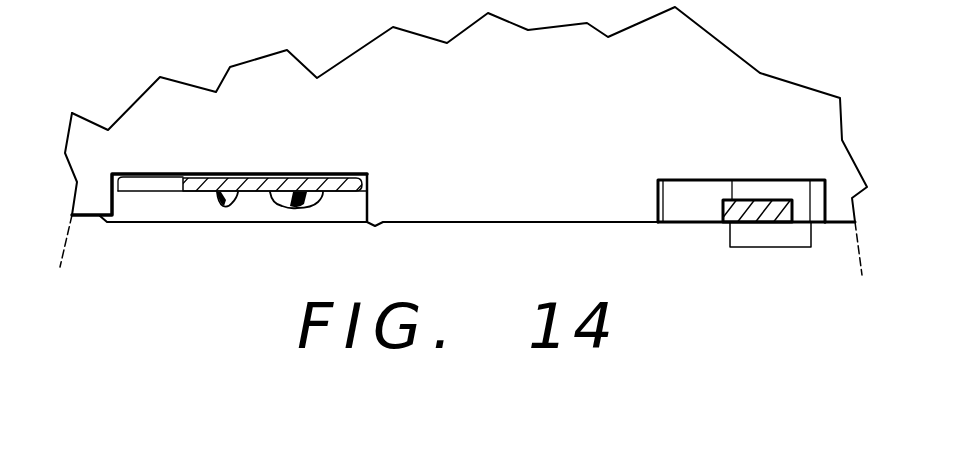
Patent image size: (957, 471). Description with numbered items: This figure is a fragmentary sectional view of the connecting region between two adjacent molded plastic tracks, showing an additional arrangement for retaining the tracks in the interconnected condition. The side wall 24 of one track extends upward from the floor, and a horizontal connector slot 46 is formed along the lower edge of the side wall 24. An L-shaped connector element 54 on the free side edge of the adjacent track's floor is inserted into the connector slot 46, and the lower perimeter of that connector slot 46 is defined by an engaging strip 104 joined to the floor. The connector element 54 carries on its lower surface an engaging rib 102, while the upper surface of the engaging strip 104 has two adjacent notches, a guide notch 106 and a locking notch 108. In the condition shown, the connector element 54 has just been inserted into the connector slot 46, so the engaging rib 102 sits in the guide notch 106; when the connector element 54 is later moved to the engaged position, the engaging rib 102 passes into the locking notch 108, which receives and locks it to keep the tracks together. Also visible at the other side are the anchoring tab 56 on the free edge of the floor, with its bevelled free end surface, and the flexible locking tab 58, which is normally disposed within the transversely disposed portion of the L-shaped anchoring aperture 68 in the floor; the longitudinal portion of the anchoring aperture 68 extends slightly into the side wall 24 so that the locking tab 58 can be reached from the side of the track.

The side wall 24 is at (548, 85).
The horizontal connector slot 46 is at (118, 170).
The connector element 54 is at (327, 178).
The anchoring tab 56 is at (783, 198).
The locking tab 58 is at (758, 237).
The anchoring aperture 68 is at (722, 200).
The engaging rib 102 is at (290, 205).
The engaging strip 104 is at (158, 205).
The guide notch 106 is at (317, 200).
The locking notch 108 is at (218, 208).